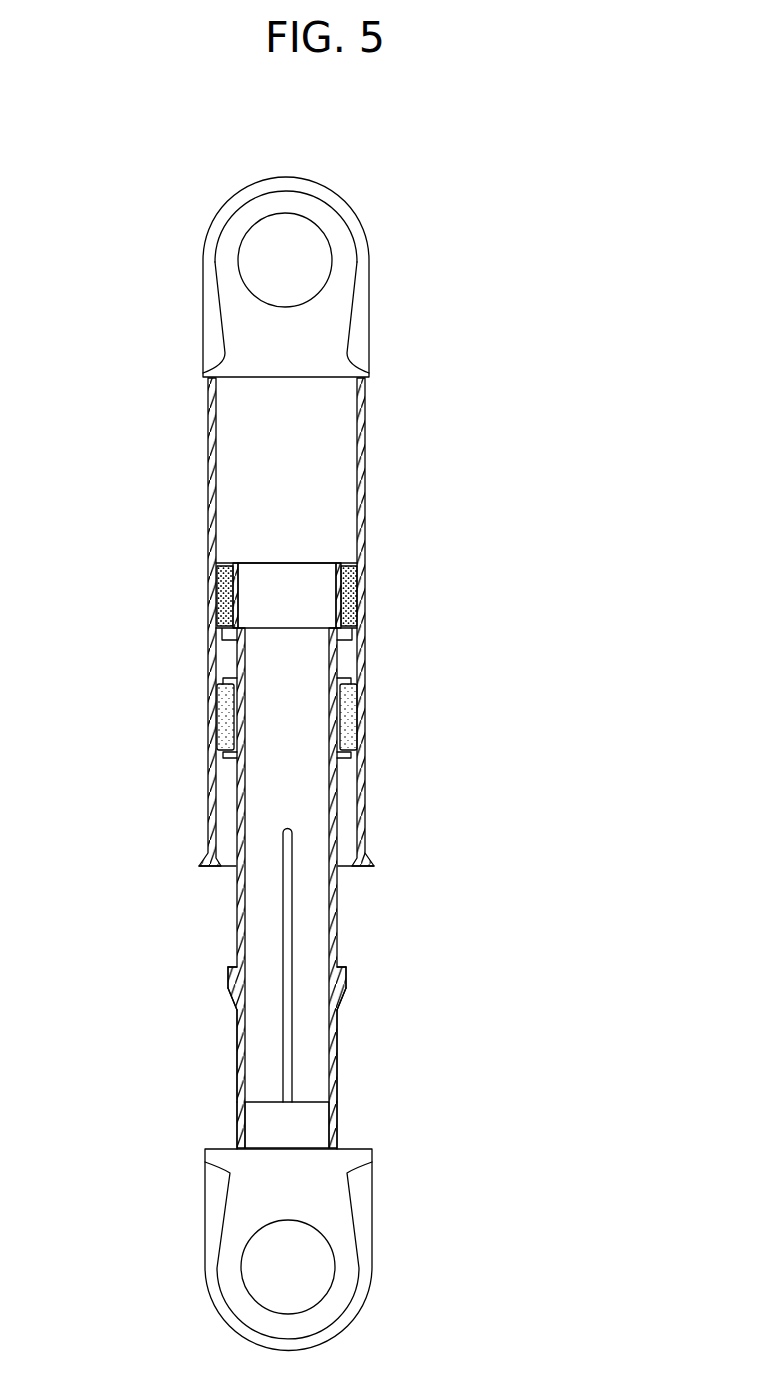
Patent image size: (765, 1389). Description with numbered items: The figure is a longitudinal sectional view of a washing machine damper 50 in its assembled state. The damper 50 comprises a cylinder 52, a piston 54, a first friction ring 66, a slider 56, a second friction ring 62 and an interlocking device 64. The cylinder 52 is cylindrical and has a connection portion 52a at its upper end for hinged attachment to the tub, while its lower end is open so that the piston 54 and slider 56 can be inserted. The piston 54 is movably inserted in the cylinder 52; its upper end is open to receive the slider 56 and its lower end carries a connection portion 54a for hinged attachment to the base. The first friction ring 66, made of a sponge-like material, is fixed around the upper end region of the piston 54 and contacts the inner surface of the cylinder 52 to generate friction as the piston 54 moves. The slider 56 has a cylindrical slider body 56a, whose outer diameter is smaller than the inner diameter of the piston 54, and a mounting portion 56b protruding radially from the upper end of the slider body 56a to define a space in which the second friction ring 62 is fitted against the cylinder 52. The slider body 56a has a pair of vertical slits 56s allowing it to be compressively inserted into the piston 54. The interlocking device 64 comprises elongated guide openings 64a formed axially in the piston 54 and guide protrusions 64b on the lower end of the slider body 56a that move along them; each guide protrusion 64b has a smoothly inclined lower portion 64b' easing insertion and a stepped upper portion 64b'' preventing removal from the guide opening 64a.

The damper 50 is at (418, 296).
The cylinder 52 is at (196, 467).
The connection portion 52a is at (338, 328).
The piston 54 is at (218, 1120).
The connection portion 54a is at (343, 1202).
The slider 56 is at (226, 663).
The slider body 56a is at (333, 660).
The mounting portion 56b is at (345, 598).
The vertical slits 56s is at (292, 938).
The second friction ring 62 is at (222, 604).
The first friction ring 66 is at (228, 720).
The interlocking device 64 is at (218, 1002).
The guide openings 64a is at (338, 1043).
The guide protrusions 64b is at (351, 984).
The smoothly inclined lower portion 64b' is at (353, 1010).
The stepped upper portion 64b'' is at (354, 952).